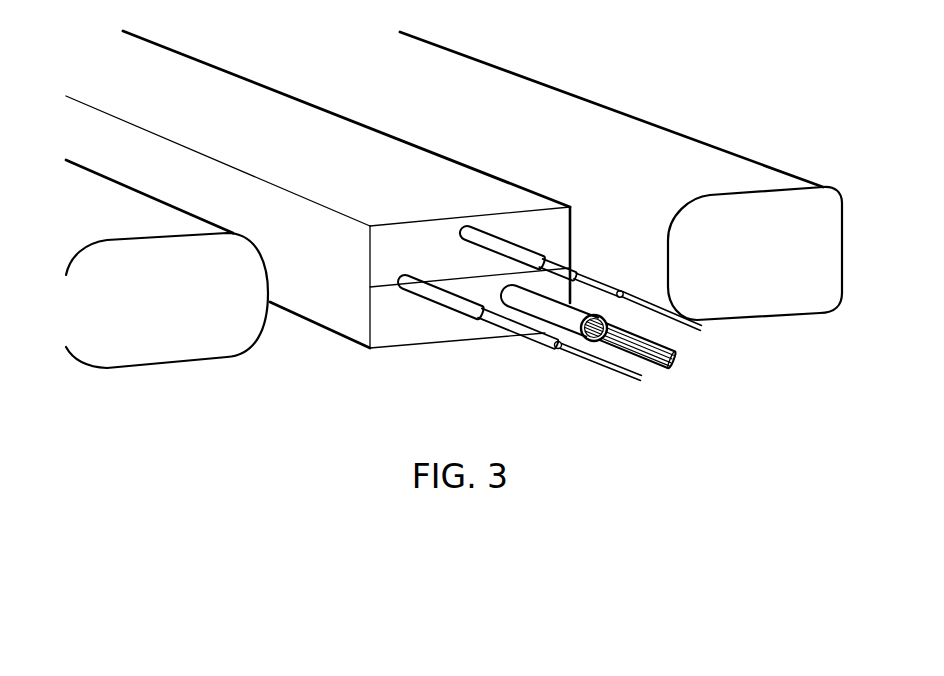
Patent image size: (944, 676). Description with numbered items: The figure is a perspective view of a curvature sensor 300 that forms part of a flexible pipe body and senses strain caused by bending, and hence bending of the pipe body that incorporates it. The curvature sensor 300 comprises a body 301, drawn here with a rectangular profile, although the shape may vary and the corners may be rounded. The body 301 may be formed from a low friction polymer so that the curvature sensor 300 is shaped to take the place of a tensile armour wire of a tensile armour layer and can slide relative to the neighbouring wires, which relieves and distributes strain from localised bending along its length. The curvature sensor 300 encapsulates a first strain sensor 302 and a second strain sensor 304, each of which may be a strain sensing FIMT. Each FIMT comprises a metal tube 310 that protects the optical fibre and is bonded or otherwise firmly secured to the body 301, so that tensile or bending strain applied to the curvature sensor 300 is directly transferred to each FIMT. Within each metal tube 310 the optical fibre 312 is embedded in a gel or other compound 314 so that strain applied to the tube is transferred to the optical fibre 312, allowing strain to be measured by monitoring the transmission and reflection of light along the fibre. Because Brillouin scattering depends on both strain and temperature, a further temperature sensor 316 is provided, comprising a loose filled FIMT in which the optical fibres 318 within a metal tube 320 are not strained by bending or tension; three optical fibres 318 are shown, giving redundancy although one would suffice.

The curvature sensor 300 is at (412, 122).
The body 301 is at (342, 322).
The first strain sensor 302 is at (470, 310).
The second strain sensor 304 is at (607, 283).
The metal tube 310 is at (517, 252).
The optical fibre 312 is at (668, 303).
The gel or other compound 314 is at (573, 273).
The temperature sensor 316 is at (673, 367).
The optical fibres 318 is at (622, 350).
The metal tube 320 is at (587, 350).